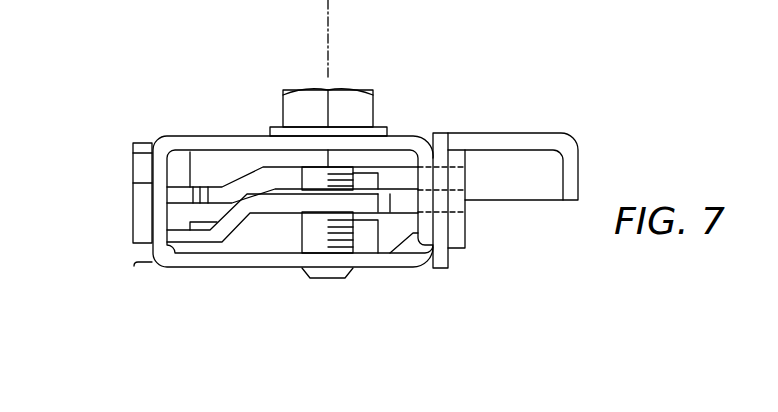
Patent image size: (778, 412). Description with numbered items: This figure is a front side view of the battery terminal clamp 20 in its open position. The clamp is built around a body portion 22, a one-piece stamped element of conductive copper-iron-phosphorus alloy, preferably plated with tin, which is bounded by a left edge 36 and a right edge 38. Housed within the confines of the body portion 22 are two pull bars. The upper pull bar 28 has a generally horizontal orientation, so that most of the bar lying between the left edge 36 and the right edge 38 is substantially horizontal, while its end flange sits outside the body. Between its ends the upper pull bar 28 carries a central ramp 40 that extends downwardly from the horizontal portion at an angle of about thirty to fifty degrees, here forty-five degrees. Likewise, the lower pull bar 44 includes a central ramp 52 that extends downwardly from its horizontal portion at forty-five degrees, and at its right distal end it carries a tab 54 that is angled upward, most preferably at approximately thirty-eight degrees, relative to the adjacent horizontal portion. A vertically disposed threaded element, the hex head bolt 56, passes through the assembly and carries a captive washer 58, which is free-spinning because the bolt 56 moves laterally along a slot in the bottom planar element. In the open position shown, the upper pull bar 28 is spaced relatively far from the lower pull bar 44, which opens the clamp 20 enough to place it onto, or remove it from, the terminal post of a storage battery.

The battery terminal clamp 20 is at (443, 97).
The body portion 22 is at (150, 160).
The upper pull bar 28 is at (285, 158).
The left edge 36 is at (143, 262).
The right edge 38 is at (452, 254).
The central ramp 40 is at (300, 146).
The lower pull bar 44 is at (287, 196).
The central ramp 52 is at (222, 215).
The tab 54 is at (467, 192).
The bolt 56 is at (355, 232).
The captive washer 58 is at (387, 125).